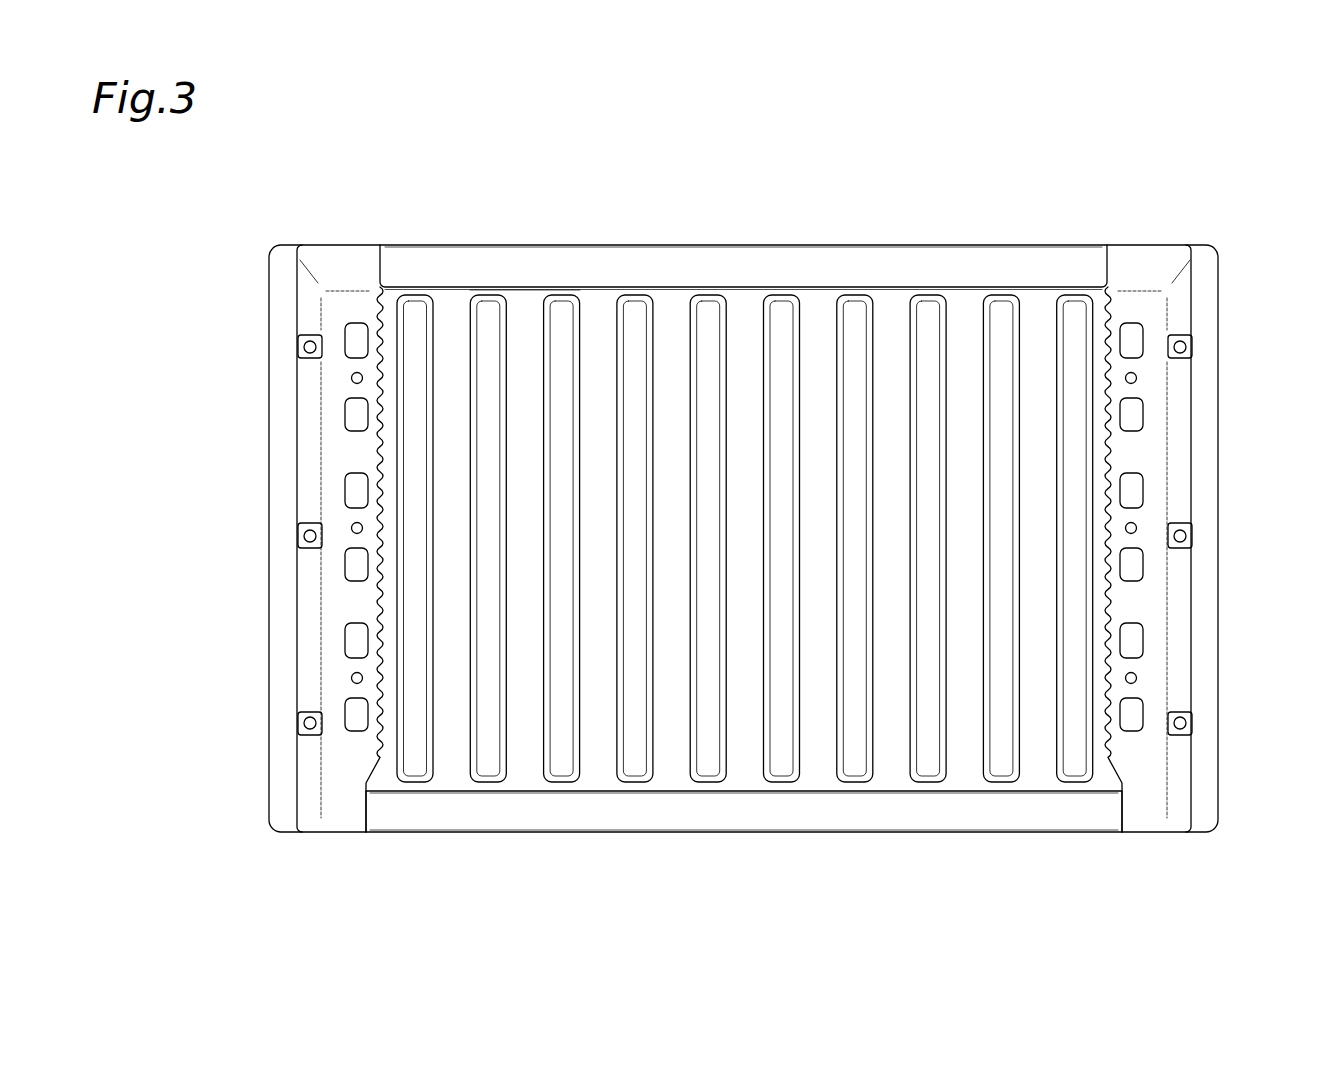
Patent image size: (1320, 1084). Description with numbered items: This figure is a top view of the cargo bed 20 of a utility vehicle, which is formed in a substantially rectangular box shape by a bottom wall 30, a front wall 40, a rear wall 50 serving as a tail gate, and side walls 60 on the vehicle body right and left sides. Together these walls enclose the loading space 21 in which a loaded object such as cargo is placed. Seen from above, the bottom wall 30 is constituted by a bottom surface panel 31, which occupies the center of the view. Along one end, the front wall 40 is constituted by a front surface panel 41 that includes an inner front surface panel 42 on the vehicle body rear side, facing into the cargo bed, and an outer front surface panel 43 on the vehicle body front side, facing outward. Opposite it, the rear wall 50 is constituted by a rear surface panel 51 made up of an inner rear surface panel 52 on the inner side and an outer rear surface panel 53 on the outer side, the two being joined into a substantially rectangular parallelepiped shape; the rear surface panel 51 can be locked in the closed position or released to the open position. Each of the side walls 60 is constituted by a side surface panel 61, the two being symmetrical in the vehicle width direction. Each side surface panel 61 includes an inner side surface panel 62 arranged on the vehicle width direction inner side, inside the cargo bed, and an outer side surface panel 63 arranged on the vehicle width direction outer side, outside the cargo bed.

The cargo bed 20 is at (1056, 190).
The loading space 21 is at (942, 312).
The bottom wall 30 is at (685, 327).
The bottom surface panel 31 is at (737, 345).
The front wall 40 is at (626, 239).
The front surface panel 41 is at (571, 245).
The inner front surface panel 42 is at (532, 290).
The outer front surface panel 43 is at (509, 245).
The rear wall 50 is at (674, 846).
The rear surface panel 51 is at (735, 835).
The inner rear surface panel 52 is at (810, 790).
The outer rear surface panel 53 is at (788, 835).
The side wall 60 is at (261, 413).
The side surface panel 61 is at (268, 473).
The inner side surface panel 62 is at (383, 507).
The outer side surface panel 63 is at (268, 538).